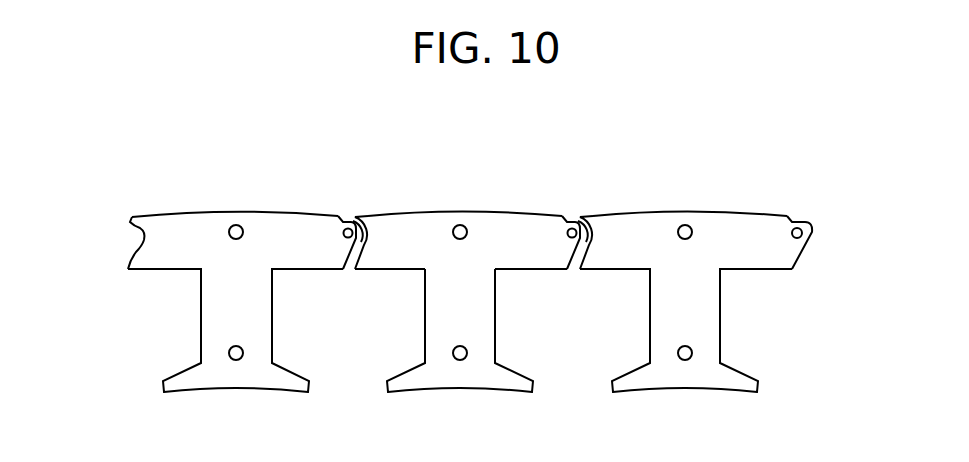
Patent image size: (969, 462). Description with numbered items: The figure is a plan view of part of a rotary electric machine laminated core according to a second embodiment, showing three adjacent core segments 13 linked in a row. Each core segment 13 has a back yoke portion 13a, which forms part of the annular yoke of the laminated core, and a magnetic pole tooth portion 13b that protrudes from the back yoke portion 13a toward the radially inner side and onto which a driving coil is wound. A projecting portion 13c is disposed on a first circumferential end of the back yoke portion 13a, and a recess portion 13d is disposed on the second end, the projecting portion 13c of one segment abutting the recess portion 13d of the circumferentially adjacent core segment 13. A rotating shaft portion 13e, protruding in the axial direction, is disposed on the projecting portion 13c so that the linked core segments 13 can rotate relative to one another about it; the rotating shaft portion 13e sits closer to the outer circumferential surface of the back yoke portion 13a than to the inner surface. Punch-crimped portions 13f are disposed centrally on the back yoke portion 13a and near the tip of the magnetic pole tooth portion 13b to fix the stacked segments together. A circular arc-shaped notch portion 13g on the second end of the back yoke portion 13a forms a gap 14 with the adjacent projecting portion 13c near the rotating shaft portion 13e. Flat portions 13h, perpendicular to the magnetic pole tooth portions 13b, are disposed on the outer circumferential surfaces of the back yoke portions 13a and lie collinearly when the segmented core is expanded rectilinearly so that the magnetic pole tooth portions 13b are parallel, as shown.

The core segment 13 is at (467, 266).
The back yoke portion 13a is at (467, 205).
The magnetic pole tooth portion 13b is at (475, 323).
The projecting portion 13c is at (818, 242).
The recess portion 13d is at (122, 264).
The rotating shaft portion 13e is at (572, 233).
The punch-crimped portions 13f is at (241, 233).
The circular arc-shaped notch portion 13g is at (131, 233).
The flat portions 13h is at (235, 211).
The gap 14 is at (365, 217).